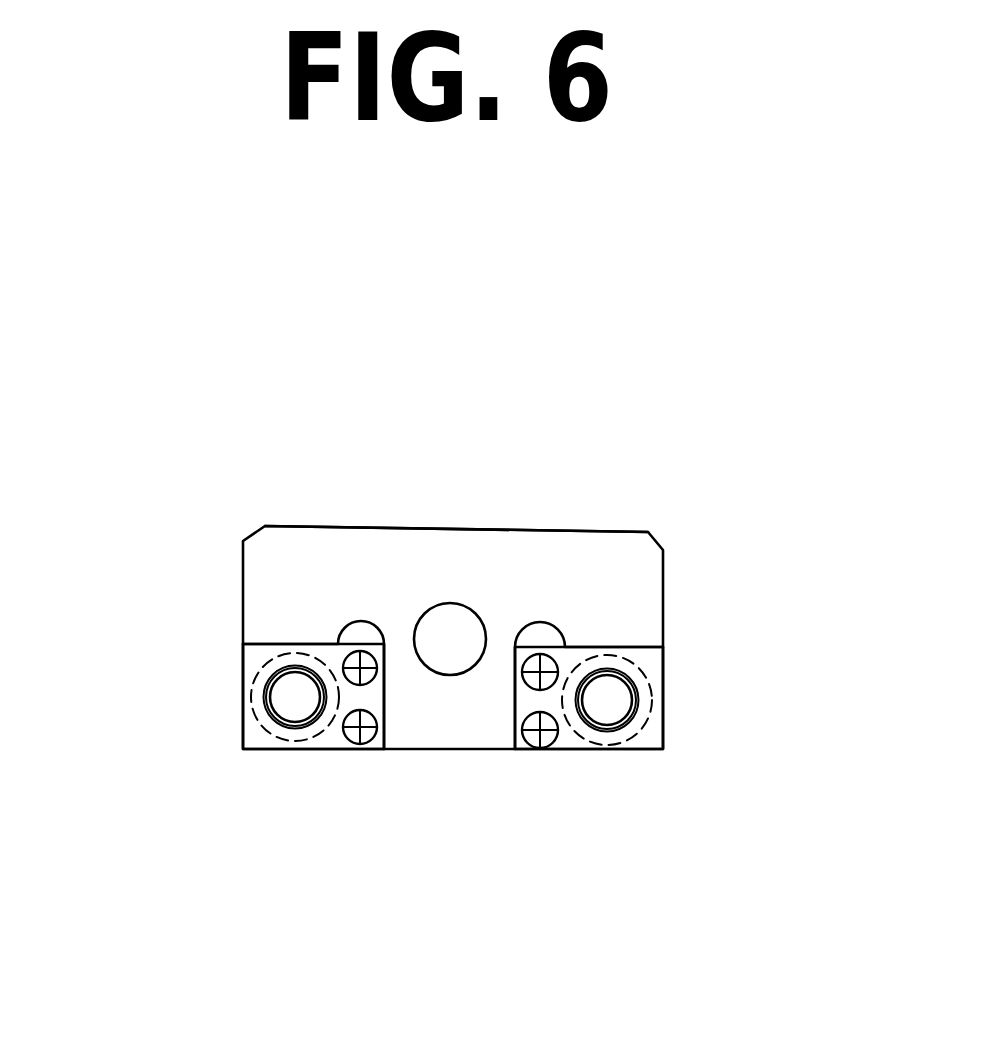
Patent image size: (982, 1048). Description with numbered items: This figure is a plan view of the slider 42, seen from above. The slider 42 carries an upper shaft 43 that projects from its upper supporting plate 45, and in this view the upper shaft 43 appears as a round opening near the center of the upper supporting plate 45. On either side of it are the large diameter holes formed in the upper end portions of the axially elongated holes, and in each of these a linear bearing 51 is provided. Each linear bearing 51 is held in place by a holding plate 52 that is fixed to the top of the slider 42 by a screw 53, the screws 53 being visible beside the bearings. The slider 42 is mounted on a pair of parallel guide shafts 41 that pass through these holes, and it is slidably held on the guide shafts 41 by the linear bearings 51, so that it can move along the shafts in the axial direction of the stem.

The guide shaft 41 is at (293, 700).
The slider 42 is at (683, 510).
The upper shaft 43 is at (465, 620).
The upper supporting plate 45 is at (346, 527).
The linear bearing 51 is at (243, 735).
The holding plate 52 is at (243, 653).
The screw 53 is at (366, 727).